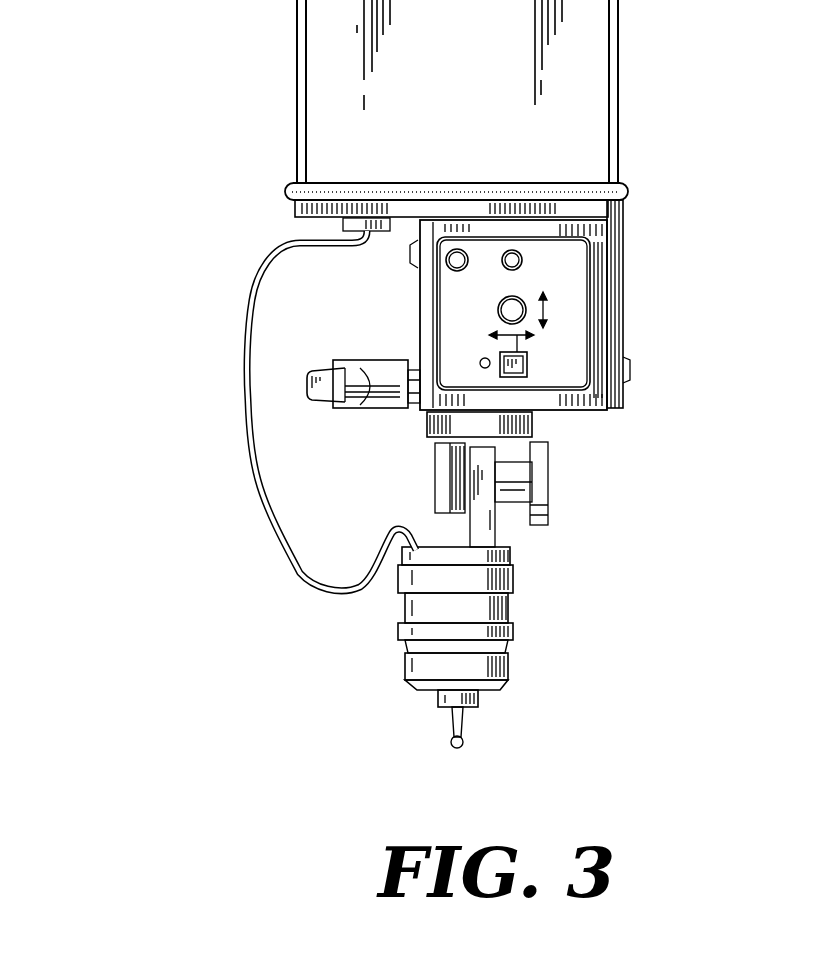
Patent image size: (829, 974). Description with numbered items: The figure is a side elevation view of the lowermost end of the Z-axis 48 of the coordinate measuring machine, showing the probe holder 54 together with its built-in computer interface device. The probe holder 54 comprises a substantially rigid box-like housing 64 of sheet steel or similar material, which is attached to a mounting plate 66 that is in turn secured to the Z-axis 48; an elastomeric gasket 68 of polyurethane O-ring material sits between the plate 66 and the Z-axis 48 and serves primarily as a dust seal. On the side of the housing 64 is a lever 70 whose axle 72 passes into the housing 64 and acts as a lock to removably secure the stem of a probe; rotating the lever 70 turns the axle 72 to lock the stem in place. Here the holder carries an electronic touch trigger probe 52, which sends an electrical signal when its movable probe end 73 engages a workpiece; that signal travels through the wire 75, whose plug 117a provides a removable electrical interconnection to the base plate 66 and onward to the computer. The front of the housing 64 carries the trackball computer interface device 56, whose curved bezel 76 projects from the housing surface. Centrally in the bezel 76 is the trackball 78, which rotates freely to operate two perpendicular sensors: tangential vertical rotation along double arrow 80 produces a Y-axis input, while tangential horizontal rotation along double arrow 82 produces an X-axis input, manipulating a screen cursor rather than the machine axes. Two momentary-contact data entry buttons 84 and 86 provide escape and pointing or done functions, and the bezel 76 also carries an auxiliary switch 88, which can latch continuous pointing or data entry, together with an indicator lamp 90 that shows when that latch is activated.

The Z-axis 48 is at (462, 64).
The electronic touch trigger probe 52 is at (507, 610).
The probe holder 54 is at (647, 261).
The trackball computer interface device 56 is at (567, 320).
The housing 64 is at (596, 400).
The mounting plate 66 is at (610, 212).
The elastomeric gasket 68 is at (630, 190).
The lever 70 is at (322, 411).
The axle 72 is at (414, 404).
The movable probe end 73 is at (463, 730).
The wire 75 is at (285, 566).
The curved bezel 76 is at (575, 355).
The trackball 78 is at (498, 310).
The double arrow 80 is at (548, 300).
The double arrow 82 is at (527, 364).
The data entry button 84 is at (446, 261).
The data entry button 86 is at (507, 270).
The auxiliary switch 88 is at (519, 378).
The indicator lamp 90 is at (483, 367).
The plug 117a is at (343, 224).